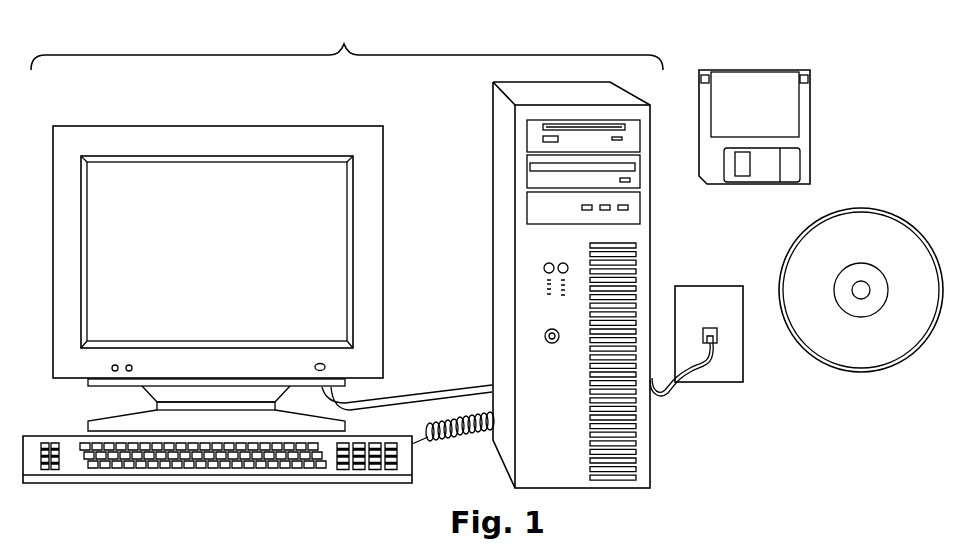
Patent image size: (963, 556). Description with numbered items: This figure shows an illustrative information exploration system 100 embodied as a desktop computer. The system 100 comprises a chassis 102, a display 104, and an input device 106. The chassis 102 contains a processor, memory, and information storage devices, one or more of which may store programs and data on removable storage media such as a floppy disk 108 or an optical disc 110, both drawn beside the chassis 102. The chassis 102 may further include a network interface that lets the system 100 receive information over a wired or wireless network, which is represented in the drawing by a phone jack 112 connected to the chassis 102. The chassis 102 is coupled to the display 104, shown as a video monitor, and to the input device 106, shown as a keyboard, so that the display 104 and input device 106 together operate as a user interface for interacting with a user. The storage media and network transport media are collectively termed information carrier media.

The information exploration system 100 is at (347, 42).
The chassis 102 is at (492, 330).
The display 104 is at (78, 380).
The input device 106 is at (67, 482).
The floppy disk 108 is at (812, 157).
The optical disc 110 is at (873, 208).
The phone jack 112 is at (700, 285).